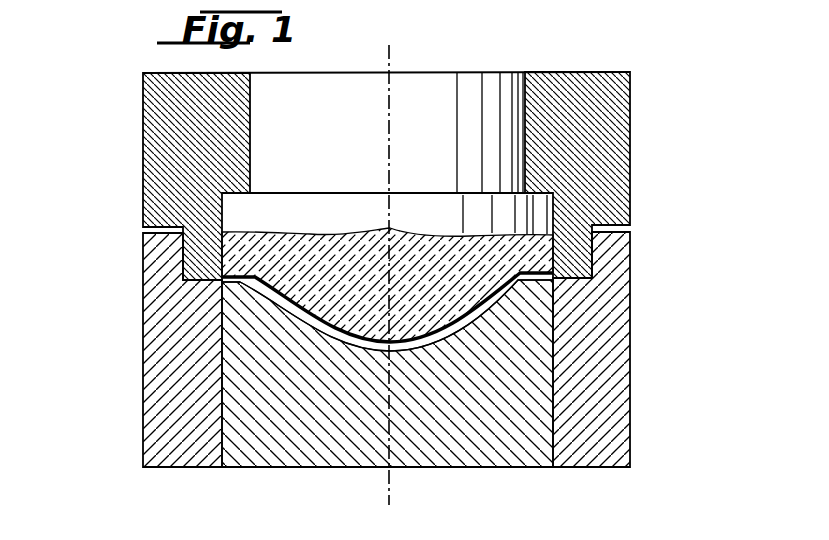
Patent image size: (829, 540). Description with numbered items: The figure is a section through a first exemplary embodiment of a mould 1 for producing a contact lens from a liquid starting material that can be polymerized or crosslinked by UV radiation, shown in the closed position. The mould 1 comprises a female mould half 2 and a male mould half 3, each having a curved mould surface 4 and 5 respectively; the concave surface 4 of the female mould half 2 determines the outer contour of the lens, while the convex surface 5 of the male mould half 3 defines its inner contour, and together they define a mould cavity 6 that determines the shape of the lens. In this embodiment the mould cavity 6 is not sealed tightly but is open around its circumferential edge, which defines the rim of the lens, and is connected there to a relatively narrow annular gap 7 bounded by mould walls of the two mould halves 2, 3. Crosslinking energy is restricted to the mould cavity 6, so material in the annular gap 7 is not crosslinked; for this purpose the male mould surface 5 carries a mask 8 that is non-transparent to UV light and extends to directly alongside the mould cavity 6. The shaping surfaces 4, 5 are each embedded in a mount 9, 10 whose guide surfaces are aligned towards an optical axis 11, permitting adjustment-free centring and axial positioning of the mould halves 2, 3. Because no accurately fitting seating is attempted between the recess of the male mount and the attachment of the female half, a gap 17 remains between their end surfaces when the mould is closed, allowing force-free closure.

The mould 1 is at (118, 160).
The female mould half 2 is at (144, 404).
The male mould half 3 is at (143, 95).
The curved mould surface 4 is at (387, 316).
The curved mould surface 5 is at (387, 342).
The mould cavity 6 is at (358, 343).
The annular gap 7 is at (252, 285).
The mask 8 is at (255, 272).
The mount 9 is at (617, 392).
The mount 10 is at (610, 150).
The optical axis 11 is at (391, 493).
The gap 17 is at (150, 230).